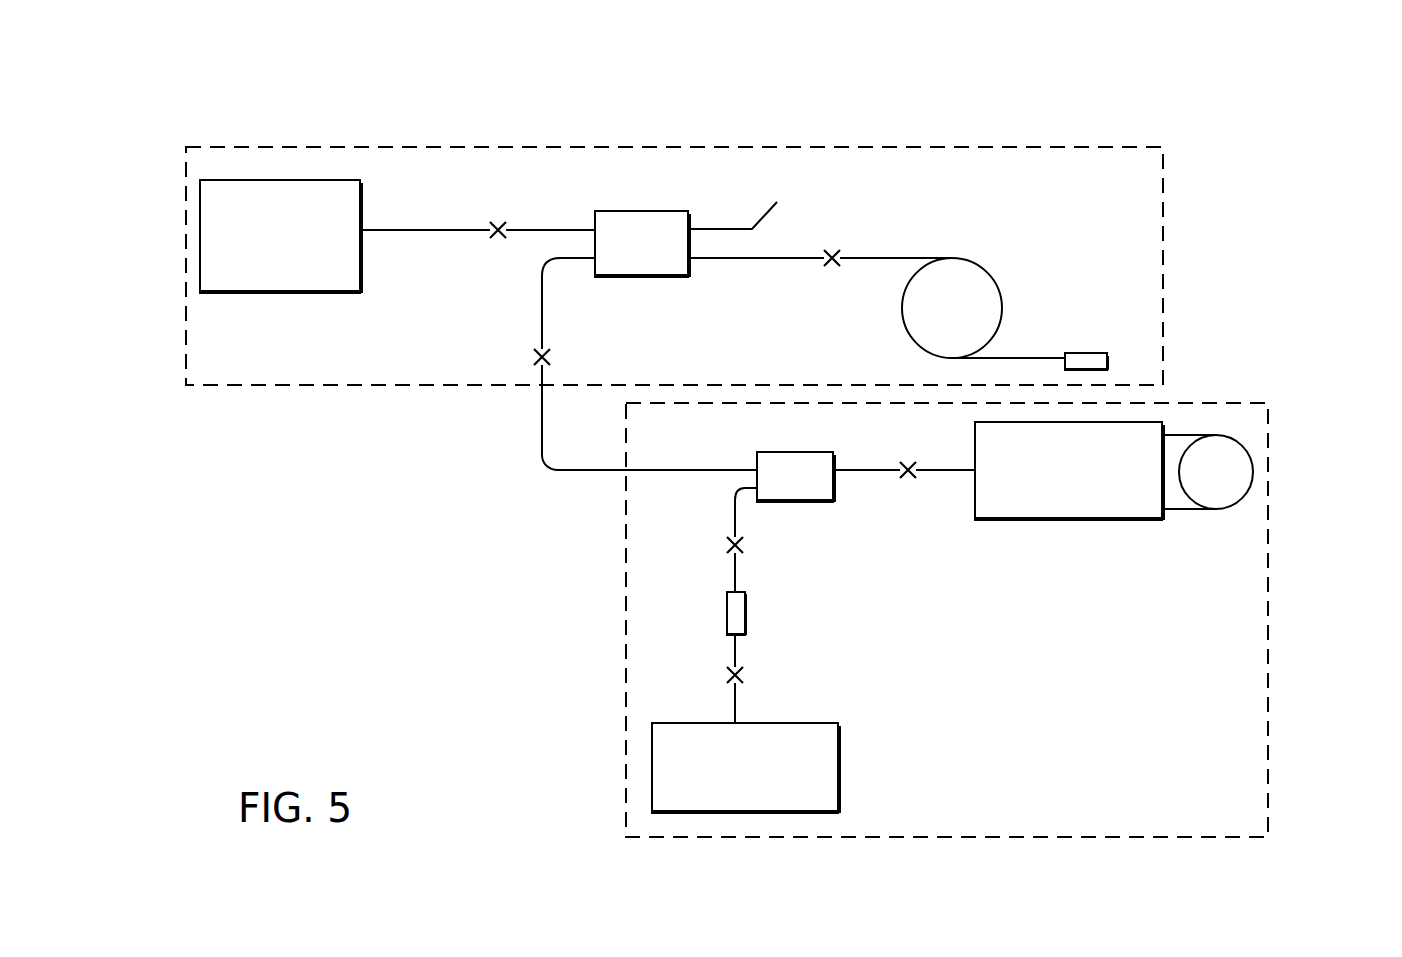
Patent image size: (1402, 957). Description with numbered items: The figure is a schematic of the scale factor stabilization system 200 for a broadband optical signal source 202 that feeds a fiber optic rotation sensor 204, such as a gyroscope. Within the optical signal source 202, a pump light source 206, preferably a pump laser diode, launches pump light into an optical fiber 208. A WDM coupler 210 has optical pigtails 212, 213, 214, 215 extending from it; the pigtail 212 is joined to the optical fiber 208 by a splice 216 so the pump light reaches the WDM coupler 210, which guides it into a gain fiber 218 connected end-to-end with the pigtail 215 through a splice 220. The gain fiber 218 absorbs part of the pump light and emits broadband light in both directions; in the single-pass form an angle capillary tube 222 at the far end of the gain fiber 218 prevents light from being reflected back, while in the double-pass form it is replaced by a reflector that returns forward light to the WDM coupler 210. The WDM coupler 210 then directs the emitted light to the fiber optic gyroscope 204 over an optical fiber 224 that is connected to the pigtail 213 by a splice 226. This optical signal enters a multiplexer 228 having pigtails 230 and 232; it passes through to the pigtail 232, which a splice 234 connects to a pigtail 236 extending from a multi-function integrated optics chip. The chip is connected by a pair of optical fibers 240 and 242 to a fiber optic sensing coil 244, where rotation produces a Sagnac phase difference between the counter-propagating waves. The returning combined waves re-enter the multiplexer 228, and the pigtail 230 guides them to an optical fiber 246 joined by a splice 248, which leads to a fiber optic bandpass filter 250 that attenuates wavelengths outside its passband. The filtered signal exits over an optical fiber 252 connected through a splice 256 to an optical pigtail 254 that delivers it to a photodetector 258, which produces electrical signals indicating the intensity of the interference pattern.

The scale factor stabilization system 200 is at (1362, 117).
The broadband optical signal source 202 is at (603, 147).
The fiber optic rotation sensor 204 is at (626, 736).
The pump light source 206 is at (270, 293).
The optical fiber 208 is at (436, 228).
The WDM coupler 210 is at (646, 211).
The optical pigtail 212 is at (549, 228).
The optical pigtail 213 is at (544, 285).
The optical pigtail 214 is at (716, 229).
The optical fiber pigtail 215 is at (751, 260).
The splice 216 is at (498, 243).
The gain fiber 218 is at (996, 282).
The splice 220 is at (835, 249).
The angle capillary tube 222 is at (1087, 353).
The optical fiber 224 is at (542, 438).
The splice 226 is at (550, 357).
The multiplexer 228 is at (800, 452).
The optical fiber pigtail 230 is at (734, 508).
The optical fiber pigtail 232 is at (870, 470).
The splice 234 is at (906, 480).
The pigtail 236 is at (950, 472).
The optical fiber 240 is at (1178, 436).
The optical fiber 242 is at (1178, 510).
The fiber optic sensing coil 244 is at (1242, 506).
The optical fiber 246 is at (734, 572).
The splice 248 is at (744, 545).
The fiber optic bandpass filter 250 is at (747, 610).
The optical fiber 252 is at (733, 648).
The optical pigtail 254 is at (733, 708).
The splice 256 is at (747, 675).
The photodetector 258 is at (838, 757).